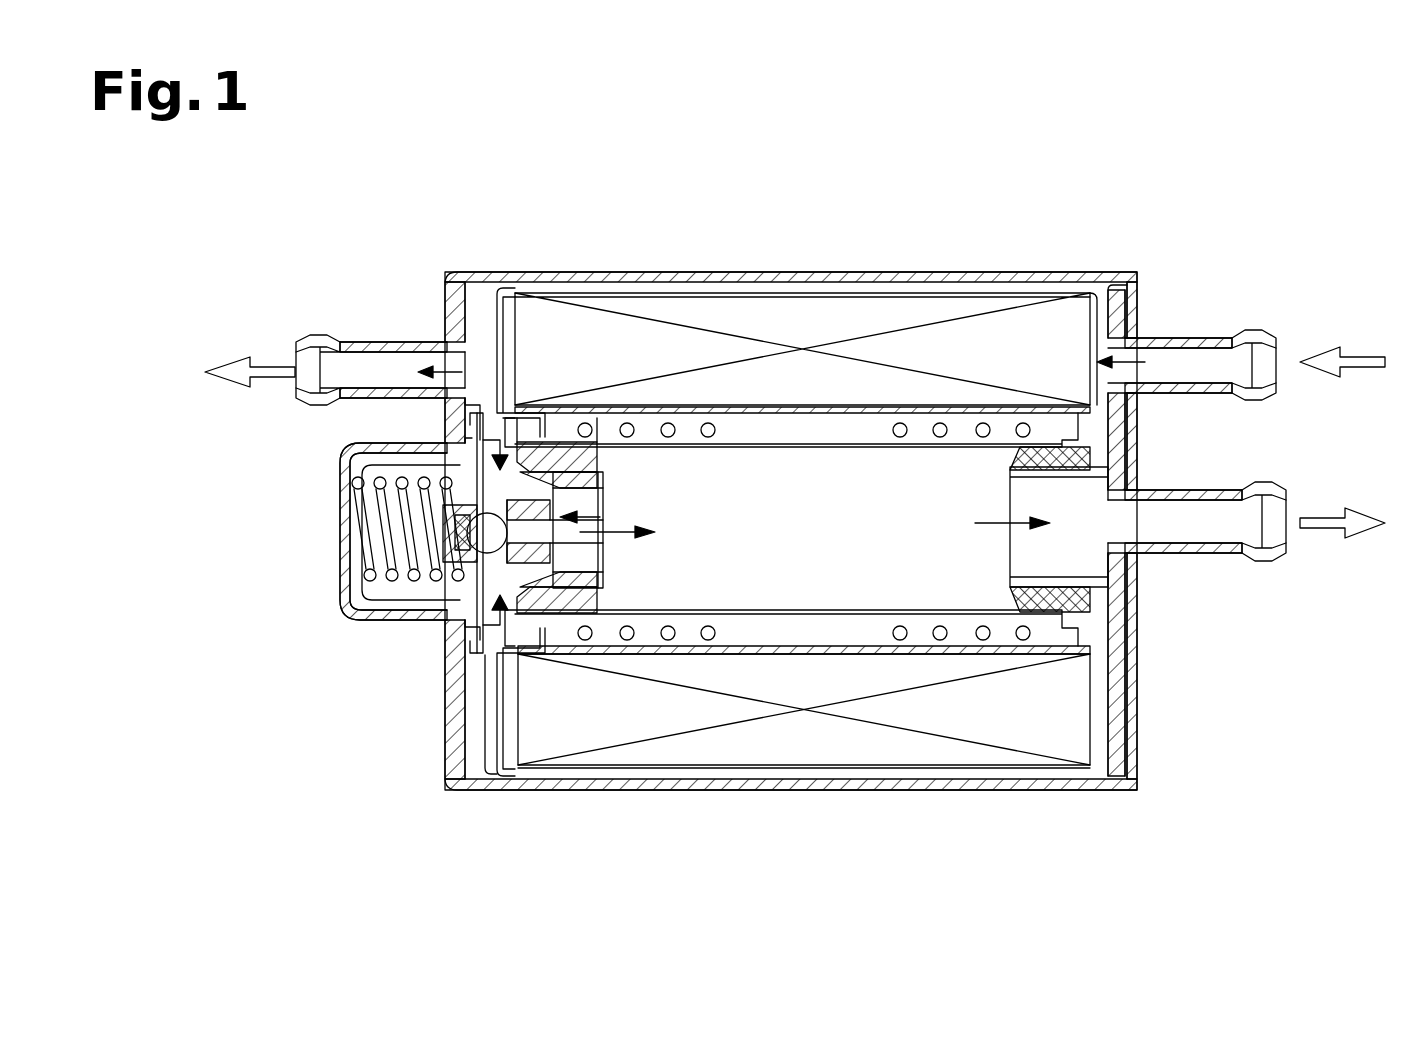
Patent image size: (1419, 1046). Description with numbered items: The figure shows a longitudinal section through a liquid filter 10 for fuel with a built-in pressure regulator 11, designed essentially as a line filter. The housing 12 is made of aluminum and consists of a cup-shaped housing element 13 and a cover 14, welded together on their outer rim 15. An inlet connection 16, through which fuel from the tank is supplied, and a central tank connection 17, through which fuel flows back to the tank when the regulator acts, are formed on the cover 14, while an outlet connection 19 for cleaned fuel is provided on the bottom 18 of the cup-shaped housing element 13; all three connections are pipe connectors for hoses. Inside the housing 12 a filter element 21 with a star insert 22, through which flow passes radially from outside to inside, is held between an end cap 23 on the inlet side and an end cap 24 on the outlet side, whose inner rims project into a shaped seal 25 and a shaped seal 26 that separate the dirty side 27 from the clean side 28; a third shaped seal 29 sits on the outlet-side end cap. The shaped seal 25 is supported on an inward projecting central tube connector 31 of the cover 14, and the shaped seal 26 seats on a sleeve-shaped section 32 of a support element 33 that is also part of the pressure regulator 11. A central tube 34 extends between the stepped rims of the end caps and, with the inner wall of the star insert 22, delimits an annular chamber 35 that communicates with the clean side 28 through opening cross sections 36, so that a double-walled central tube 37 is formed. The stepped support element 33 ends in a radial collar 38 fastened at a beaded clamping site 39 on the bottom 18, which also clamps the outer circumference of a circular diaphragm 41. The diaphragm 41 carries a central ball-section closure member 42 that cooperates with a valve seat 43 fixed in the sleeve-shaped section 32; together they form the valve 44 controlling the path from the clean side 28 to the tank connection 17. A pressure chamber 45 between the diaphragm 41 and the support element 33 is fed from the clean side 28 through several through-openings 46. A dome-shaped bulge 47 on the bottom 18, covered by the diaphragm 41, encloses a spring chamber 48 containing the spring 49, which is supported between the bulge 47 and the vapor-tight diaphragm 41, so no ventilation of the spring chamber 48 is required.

The liquid filter 10 is at (1045, 250).
The pressure regulator 11 is at (478, 548).
The housing 12 is at (960, 800).
The cup-shaped housing element 13 is at (470, 293).
The cover 14 is at (1115, 318).
The outer rim 15 is at (1133, 275).
The inlet connection 16 is at (1215, 355).
The tank connection 17 is at (1225, 525).
The bottom 18 is at (463, 745).
The outlet connection 19 is at (305, 355).
The filter element 21 is at (700, 278).
The star insert 22 is at (787, 320).
The end cap 23 is at (1105, 395).
The end cap 24 is at (520, 350).
The shaped seal 25 is at (1080, 455).
The shaped seal 26 is at (525, 627).
The dirty side 27 is at (973, 288).
The clean side 28 is at (482, 318).
The third shaped seal 29 is at (535, 300).
The central tube connector 31 is at (1080, 570).
The sleeve-shaped section 32 is at (600, 578).
The support element 33 is at (600, 492).
The central tube 34 is at (875, 605).
The annular chamber 35 is at (840, 627).
The opening cross sections 36 is at (560, 647).
The double-walled central tube 37 is at (826, 442).
The collar 38 is at (480, 642).
The clamping site 39 is at (450, 434).
The diaphragm 41 is at (355, 483).
The closure member 42 is at (455, 582).
The valve seat 43 is at (608, 550).
The valve 44 is at (605, 510).
The pressure chamber 45 is at (548, 445).
The through-openings 46 is at (497, 438).
The dome-shaped bulge 47 is at (412, 555).
The spring chamber 48 is at (470, 470).
The spring 49 is at (398, 596).